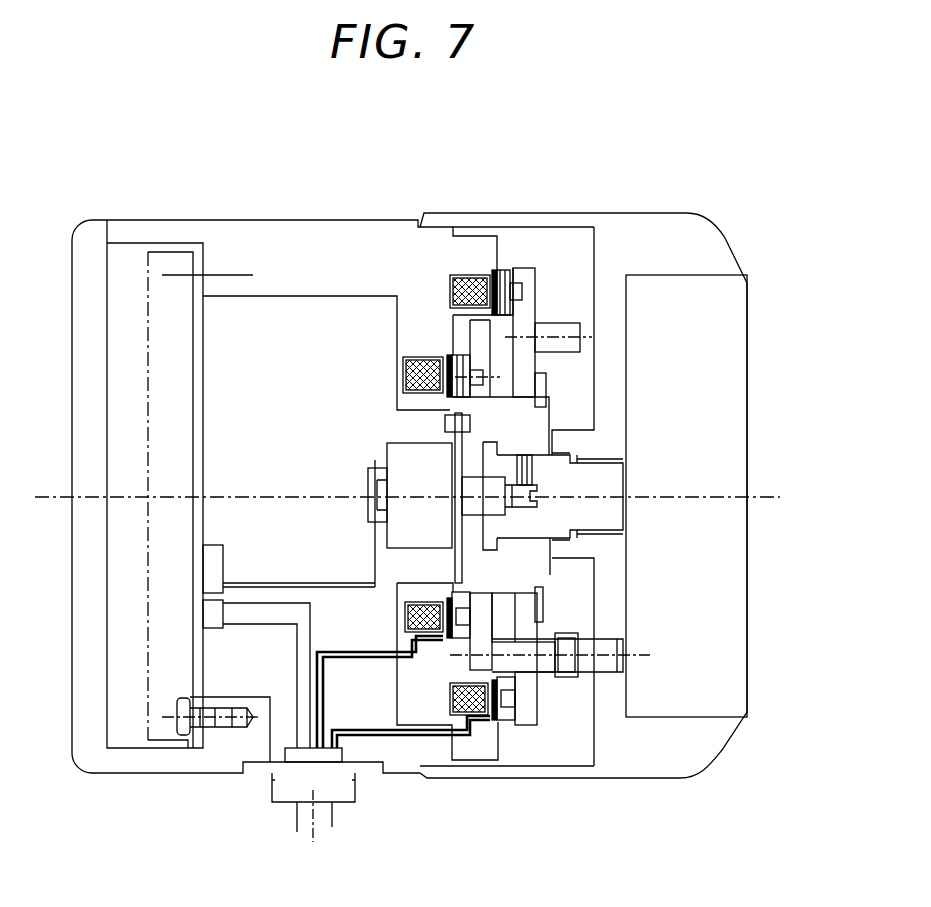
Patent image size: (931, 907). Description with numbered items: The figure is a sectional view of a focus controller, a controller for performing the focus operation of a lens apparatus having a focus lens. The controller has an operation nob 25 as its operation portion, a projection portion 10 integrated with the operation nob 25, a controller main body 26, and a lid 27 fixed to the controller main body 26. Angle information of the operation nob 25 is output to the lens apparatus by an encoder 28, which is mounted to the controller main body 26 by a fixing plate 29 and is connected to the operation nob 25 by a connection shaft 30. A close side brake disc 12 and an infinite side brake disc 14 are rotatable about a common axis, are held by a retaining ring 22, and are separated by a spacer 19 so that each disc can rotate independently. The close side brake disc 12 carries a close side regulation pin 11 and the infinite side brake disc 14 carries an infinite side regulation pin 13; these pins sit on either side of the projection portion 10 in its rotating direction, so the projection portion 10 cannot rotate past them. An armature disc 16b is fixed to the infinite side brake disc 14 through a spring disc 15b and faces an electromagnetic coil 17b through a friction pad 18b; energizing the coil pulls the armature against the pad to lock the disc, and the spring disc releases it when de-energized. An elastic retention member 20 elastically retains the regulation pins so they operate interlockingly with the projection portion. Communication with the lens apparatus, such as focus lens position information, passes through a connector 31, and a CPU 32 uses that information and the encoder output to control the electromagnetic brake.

The projection portion 10 is at (623, 647).
The close side regulation pin 11 is at (543, 670).
The close side brake disc 12 is at (477, 646).
The infinite side regulation pin 13 is at (563, 330).
The infinite side brake disc 14 is at (525, 713).
The spring disc 15b is at (513, 272).
The armature disc 16b is at (506, 278).
The electromagnetic coil 17b is at (473, 287).
The friction pad 18b is at (500, 272).
The spacer 19 is at (503, 597).
The elastic retention member 20 is at (565, 647).
The retaining ring 22 is at (546, 382).
The operation nob 25 is at (707, 747).
The controller main body 26 is at (125, 225).
The lid 27 is at (88, 226).
The encoder 28 is at (403, 452).
The fixing plate 29 is at (462, 563).
The connection shaft 30 is at (600, 483).
The connector 31 is at (285, 792).
The CPU 32 is at (173, 255).